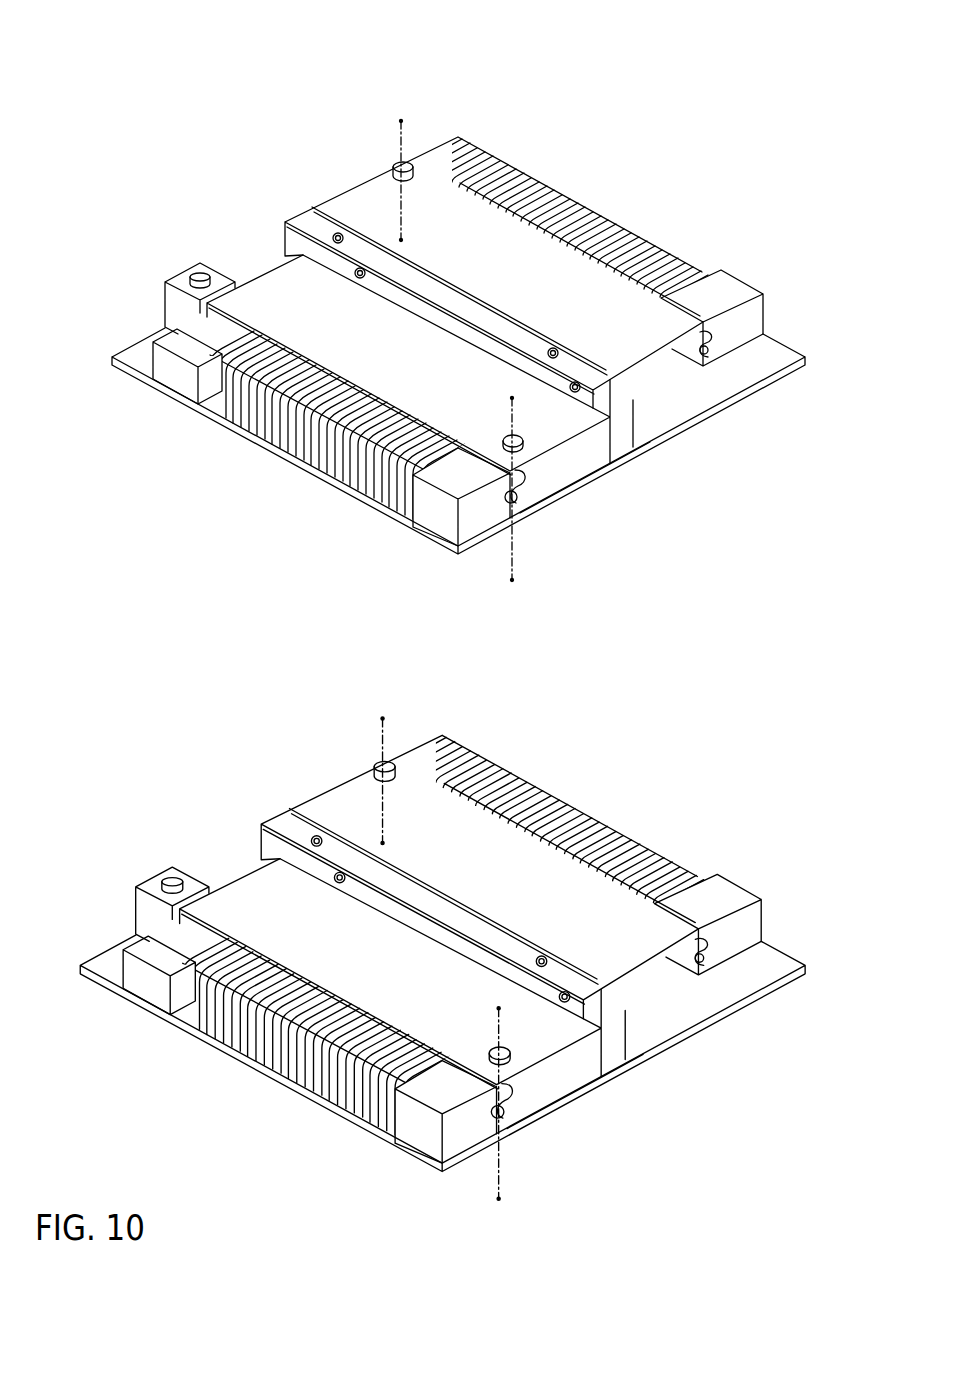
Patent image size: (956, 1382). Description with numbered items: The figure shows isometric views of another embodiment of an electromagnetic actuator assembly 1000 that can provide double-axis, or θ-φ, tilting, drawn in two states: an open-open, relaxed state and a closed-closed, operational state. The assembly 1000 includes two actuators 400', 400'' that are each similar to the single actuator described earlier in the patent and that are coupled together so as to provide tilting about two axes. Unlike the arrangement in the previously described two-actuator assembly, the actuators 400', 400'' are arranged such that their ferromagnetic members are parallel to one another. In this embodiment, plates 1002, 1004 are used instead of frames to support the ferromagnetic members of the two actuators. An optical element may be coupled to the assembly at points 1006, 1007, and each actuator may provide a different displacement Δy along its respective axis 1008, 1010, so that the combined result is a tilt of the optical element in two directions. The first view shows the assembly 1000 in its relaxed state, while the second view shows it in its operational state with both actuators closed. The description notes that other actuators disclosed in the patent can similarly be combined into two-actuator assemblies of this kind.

The EM actuator assembly 1000 is at (436, 27).
The actuator 400' is at (428, 400).
The actuator 400'' is at (544, 284).
The plate 1002 is at (517, 1128).
The plate 1004 is at (750, 985).
The coupling point 1006 is at (380, 768).
The coupling point 1007 is at (513, 1073).
The axis 1008 is at (400, 134).
The axis 1010 is at (522, 560).